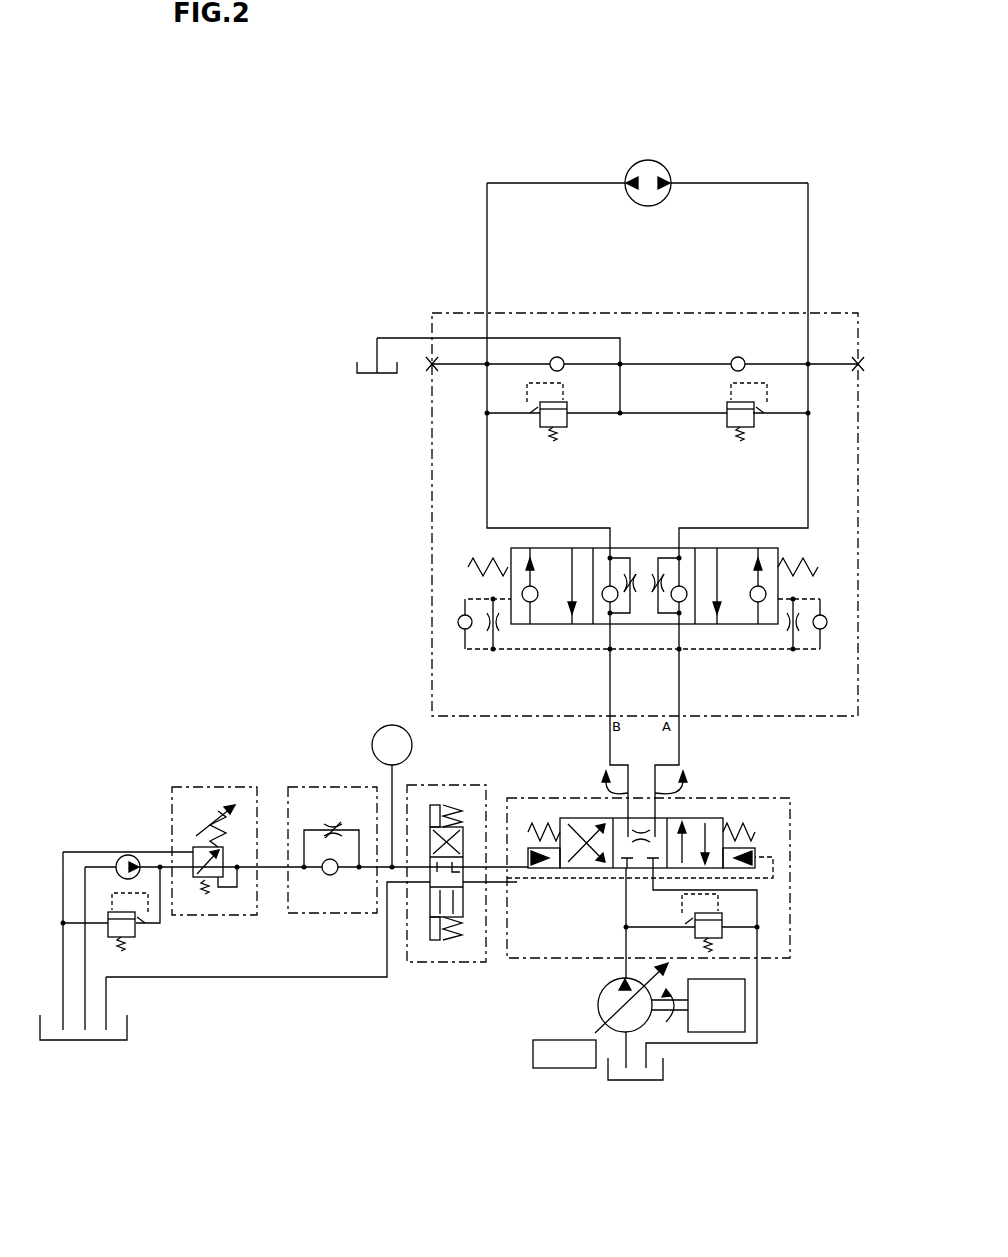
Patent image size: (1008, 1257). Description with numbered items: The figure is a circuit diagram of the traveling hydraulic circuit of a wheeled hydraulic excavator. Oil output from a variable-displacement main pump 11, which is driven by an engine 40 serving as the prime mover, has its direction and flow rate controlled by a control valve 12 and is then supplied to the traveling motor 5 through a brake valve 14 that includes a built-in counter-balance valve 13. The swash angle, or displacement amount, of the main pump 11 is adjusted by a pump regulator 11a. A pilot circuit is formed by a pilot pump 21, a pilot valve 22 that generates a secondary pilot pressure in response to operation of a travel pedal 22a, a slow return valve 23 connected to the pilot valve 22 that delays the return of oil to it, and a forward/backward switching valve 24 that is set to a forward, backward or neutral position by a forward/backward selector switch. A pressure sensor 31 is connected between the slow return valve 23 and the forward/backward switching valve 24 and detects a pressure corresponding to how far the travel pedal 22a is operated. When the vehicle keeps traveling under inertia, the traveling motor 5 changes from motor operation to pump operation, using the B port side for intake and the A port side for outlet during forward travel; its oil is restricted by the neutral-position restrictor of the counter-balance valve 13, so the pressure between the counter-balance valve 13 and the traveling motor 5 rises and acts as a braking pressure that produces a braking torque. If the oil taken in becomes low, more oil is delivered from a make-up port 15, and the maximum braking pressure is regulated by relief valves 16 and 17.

The traveling motor 5 is at (657, 161).
The variable-displacement main pump 11 is at (598, 1000).
The pump regulator 11a is at (582, 1069).
The control valve 12 is at (790, 875).
The counter-balance valve 13 is at (505, 560).
The brake valve 14 is at (428, 580).
The make-up port 15 is at (432, 332).
The relief valve 16 is at (540, 414).
The relief valve 17 is at (753, 414).
The pilot pump 21 is at (120, 858).
The pilot valve 22 is at (178, 854).
The travel pedal 22a is at (187, 787).
The slow return valve 23 is at (293, 915).
The forward/backward switching valve 24 is at (408, 963).
The pressure sensor 31 is at (373, 732).
The engine 40 is at (745, 1005).